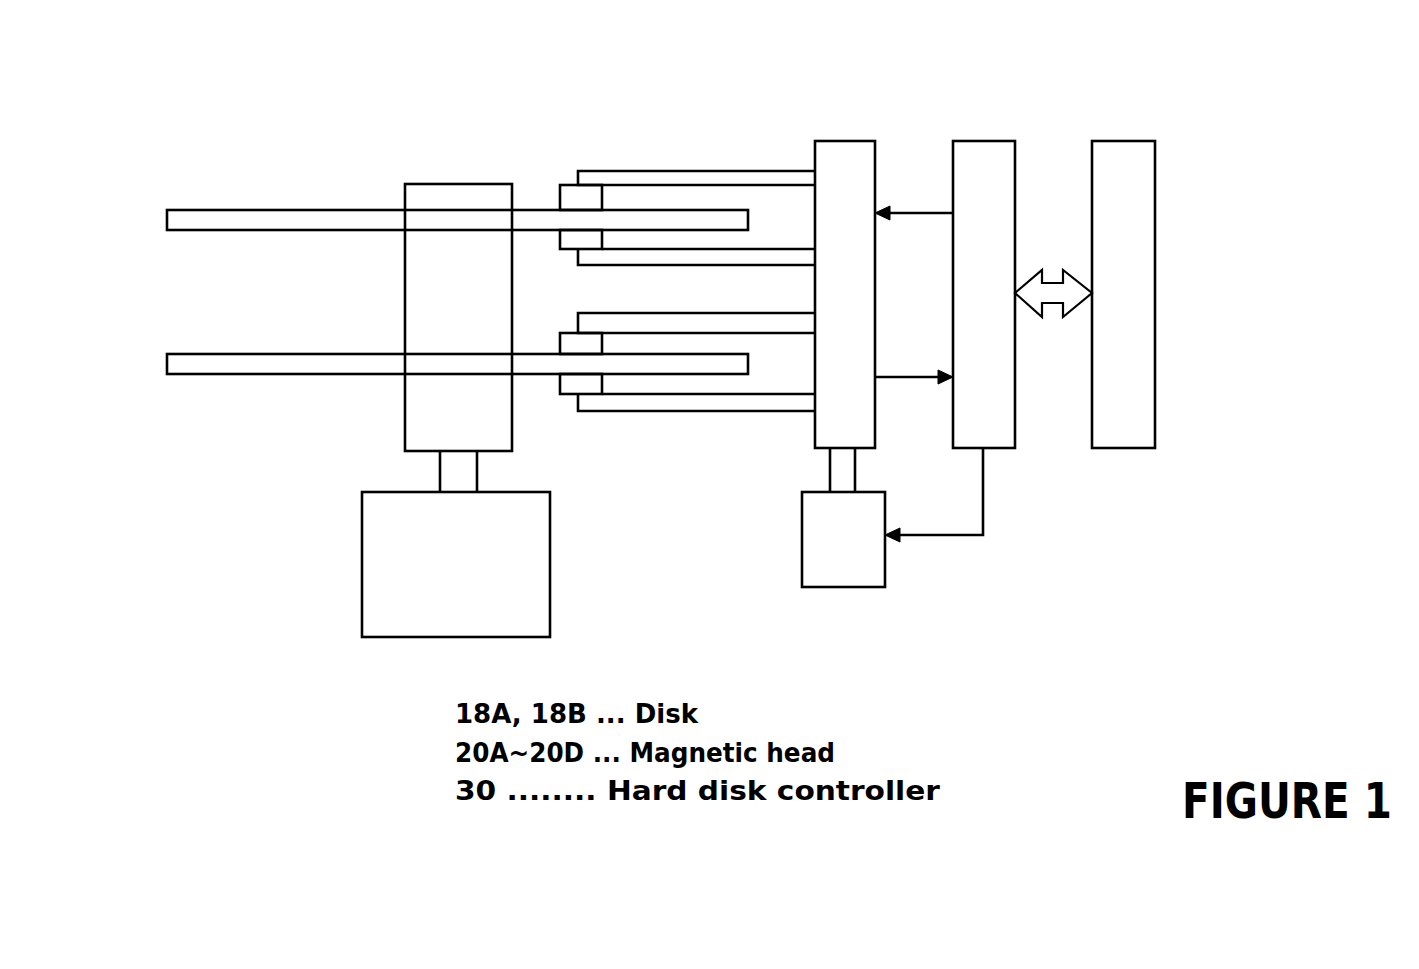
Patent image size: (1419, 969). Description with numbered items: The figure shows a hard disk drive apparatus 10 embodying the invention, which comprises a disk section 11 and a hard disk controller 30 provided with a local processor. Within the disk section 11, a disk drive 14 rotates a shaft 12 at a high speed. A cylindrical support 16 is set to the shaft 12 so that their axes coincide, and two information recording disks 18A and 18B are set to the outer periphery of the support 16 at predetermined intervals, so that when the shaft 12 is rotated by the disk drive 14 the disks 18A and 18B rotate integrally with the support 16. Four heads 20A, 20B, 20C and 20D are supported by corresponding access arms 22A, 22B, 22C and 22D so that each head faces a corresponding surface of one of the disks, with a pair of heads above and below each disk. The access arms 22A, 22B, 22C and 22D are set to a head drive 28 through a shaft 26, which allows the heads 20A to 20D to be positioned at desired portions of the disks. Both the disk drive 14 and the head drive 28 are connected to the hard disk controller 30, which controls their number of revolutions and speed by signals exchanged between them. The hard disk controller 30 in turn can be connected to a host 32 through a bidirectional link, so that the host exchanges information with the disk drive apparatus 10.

The disk drive apparatus 10 is at (680, 58).
The disk section 11 is at (656, 543).
The shaft 12 is at (440, 477).
The disk drive 14 is at (446, 578).
The cylindrical support 16 is at (450, 183).
The information recording disk 18A is at (265, 209).
The information recording disk 18B is at (258, 353).
The head 20A is at (560, 198).
The head 20B is at (560, 240).
The head 20C is at (560, 345).
The head 20D is at (560, 386).
The access arm 22A is at (692, 170).
The access arm 22B is at (692, 266).
The access arm 22C is at (677, 312).
The access arm 22D is at (682, 412).
The shaft 26 is at (842, 138).
The head drive 28 is at (827, 558).
The hard disk controller 30 is at (965, 387).
The host 32 is at (1108, 387).